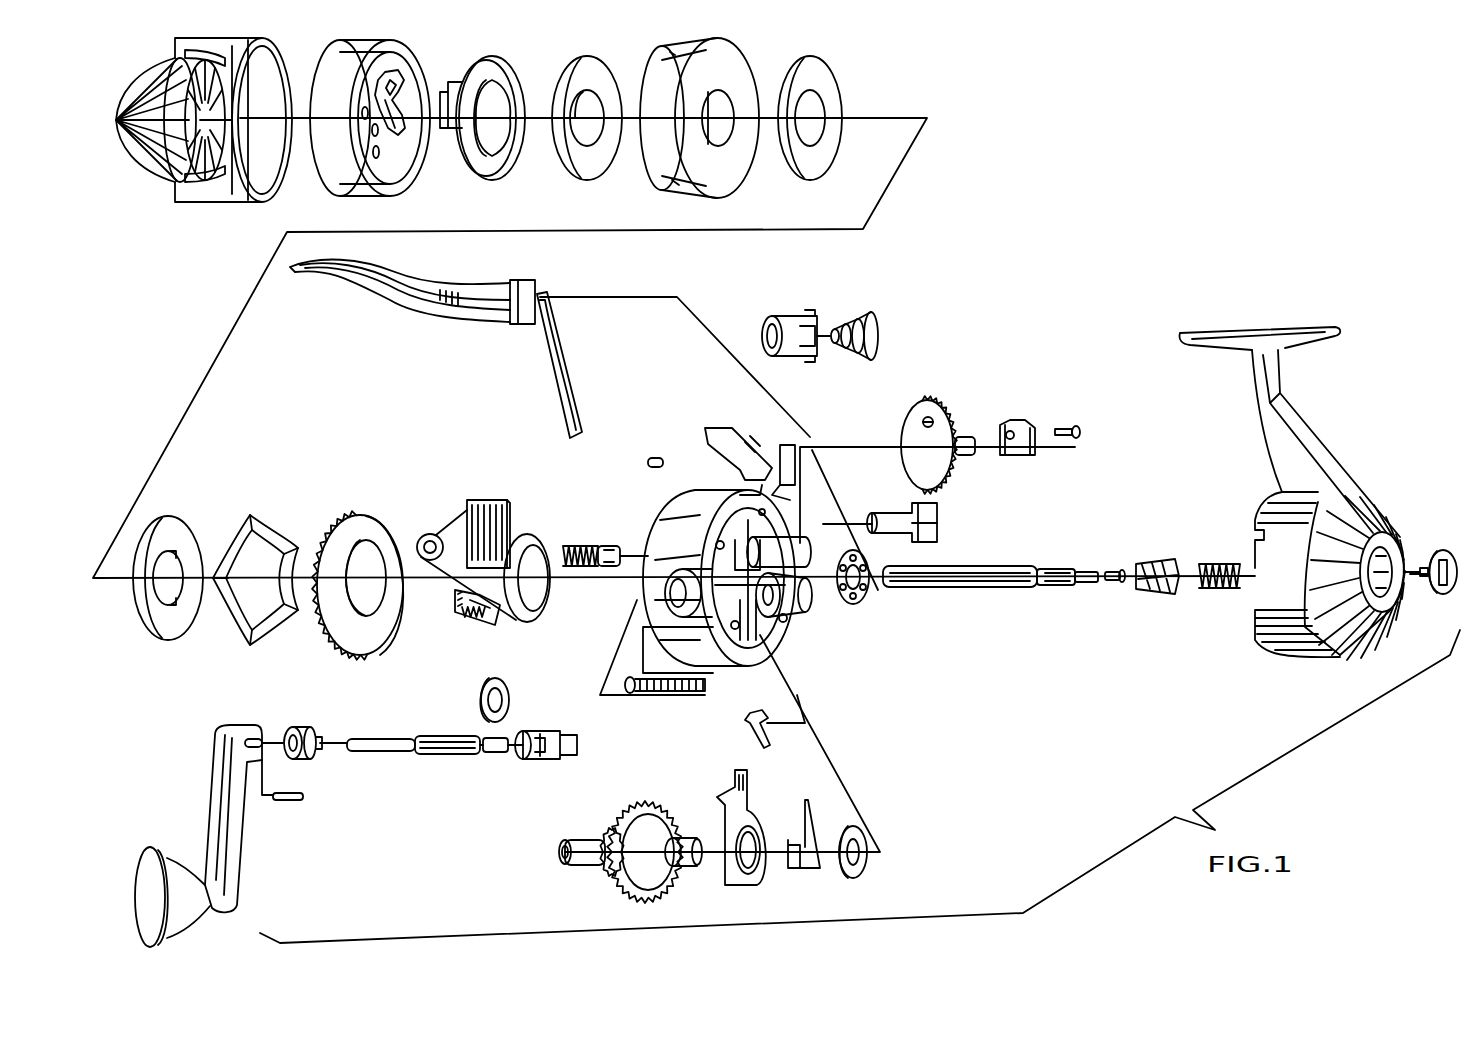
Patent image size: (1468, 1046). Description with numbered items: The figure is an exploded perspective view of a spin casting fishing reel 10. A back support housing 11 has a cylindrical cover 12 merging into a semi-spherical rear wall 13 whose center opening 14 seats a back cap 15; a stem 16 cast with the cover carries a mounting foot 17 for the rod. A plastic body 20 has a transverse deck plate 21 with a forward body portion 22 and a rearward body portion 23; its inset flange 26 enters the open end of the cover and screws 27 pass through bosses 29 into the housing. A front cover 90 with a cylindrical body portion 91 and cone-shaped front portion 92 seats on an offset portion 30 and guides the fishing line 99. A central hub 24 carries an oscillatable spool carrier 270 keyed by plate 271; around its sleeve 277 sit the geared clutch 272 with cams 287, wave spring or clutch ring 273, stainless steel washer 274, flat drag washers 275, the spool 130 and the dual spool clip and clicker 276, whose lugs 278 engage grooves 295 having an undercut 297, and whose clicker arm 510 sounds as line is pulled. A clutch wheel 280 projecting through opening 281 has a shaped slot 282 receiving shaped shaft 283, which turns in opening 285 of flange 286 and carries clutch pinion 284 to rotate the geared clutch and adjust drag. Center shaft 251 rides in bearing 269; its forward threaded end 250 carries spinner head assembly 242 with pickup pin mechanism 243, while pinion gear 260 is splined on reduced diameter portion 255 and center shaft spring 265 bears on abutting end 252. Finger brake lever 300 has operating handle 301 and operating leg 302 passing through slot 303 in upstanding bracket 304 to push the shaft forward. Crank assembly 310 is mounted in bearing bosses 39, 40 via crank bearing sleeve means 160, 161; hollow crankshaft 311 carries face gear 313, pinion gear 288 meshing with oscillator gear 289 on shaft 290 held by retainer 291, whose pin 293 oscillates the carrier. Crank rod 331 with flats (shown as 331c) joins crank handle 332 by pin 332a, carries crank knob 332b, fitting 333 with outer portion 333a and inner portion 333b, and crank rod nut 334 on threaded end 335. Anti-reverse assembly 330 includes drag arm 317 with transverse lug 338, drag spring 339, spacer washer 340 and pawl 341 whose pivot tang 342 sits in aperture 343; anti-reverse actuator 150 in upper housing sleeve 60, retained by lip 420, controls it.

The fishing reel 10 is at (976, 350).
The back support housing 11 is at (1315, 480).
The cylindrical cover 12 is at (1313, 668).
The semi-spherical rear wall 13 is at (1370, 650).
The center opening 14 is at (1393, 587).
The back cap 15 is at (1440, 550).
The stem 16 is at (1290, 428).
The mounting foot 17 is at (1258, 324).
The body 20 is at (727, 462).
The transverse deck plate 21 is at (738, 722).
The first or forward circumferential body portion 22 is at (668, 592).
The second or rearward circumferential body portion 23 is at (705, 525).
The central hub 24 is at (665, 583).
The inset flange 26 is at (733, 478).
The screw 27 is at (652, 690).
The bosses 29 is at (788, 626).
The offset portion 30 is at (690, 492).
The bearing boss 39 is at (625, 655).
The bearing boss 40 is at (805, 605).
The upper housing sleeve 60 is at (800, 545).
The front cover 90 is at (190, 237).
The cylindrical body portion 91 is at (228, 203).
The cone-shaped front portion 92 is at (133, 152).
The fishing line 99 is at (665, 183).
The spool 130 is at (735, 62).
The anti-reverse actuator 150 is at (940, 537).
The crank bearing sleeve means 160 is at (395, 758).
The crank bearing sleeve means 161 is at (790, 315).
The spinner head assembly 242 is at (393, 80).
The pickup pin mechanism 243 is at (395, 105).
The forward threaded end 250 is at (888, 586).
The center shaft 251 is at (1022, 562).
The abutting end 252 is at (1087, 585).
The reduced diameter portion 255 is at (1048, 590).
The pinion gear 260 is at (1152, 598).
The center shaft spring 265 is at (1200, 565).
The bearing 269 is at (858, 600).
The oscillatable spool carrier 270 is at (468, 558).
The plate 271 is at (483, 515).
The geared clutch 272 is at (372, 665).
The wave spring or clutch ring 273 is at (277, 528).
The stainless steel washer 274 is at (182, 522).
The flat drag washer 275 is at (585, 68).
The dual spool clip and clicker 276 is at (500, 180).
The sleeve 277 is at (490, 618).
The lugs 278 is at (500, 92).
The clutch wheel 280 is at (512, 695).
The opening 281 is at (700, 545).
The shaped slot 282 is at (505, 684).
The shaped shaft 283 is at (592, 548).
The clutch pinion 284 is at (565, 548).
The opening 285 is at (430, 540).
The flange 286 is at (450, 530).
The cams 287 is at (354, 545).
The pinion gear 288 is at (610, 875).
The oscillator gear 289 is at (905, 420).
The shaft 290 is at (968, 440).
The retainer 291 is at (1025, 420).
The pin 293 is at (935, 420).
The grooves 295 is at (478, 622).
The undercut 297 is at (720, 540).
The finger brake lever 300 is at (445, 277).
The operating handle 301 is at (405, 310).
The operating leg 302 is at (570, 360).
The slot 303 is at (788, 470).
The upstanding bracket 304 is at (712, 447).
The crank assembly 310 is at (652, 795).
The hollow crankshaft 311 is at (572, 862).
The face gear 313 is at (652, 882).
The anti-reverse drag arm 317 is at (738, 885).
The anti-reverse assembly 330 is at (758, 800).
The crank rod 331 is at (418, 751).
The shaft section 331c is at (445, 752).
The crank handle 332 is at (237, 855).
The pin 332a is at (300, 796).
The crank knob 332b is at (165, 940).
The fitting 333 is at (298, 725).
The outer portion 333a is at (302, 752).
The inner portion 333b is at (318, 738).
The crank rod nut 334 is at (876, 318).
The threaded end 335 is at (497, 755).
The transverse lug 338 is at (725, 845).
The drag spring 339 is at (812, 875).
The spacer washer 340 is at (862, 874).
The anti-reverse pawl 341 is at (775, 745).
The pivot tang 342 is at (742, 735).
The aperture 343 is at (767, 693).
The lip 420 is at (893, 540).
The clicker arm 510 is at (447, 135).